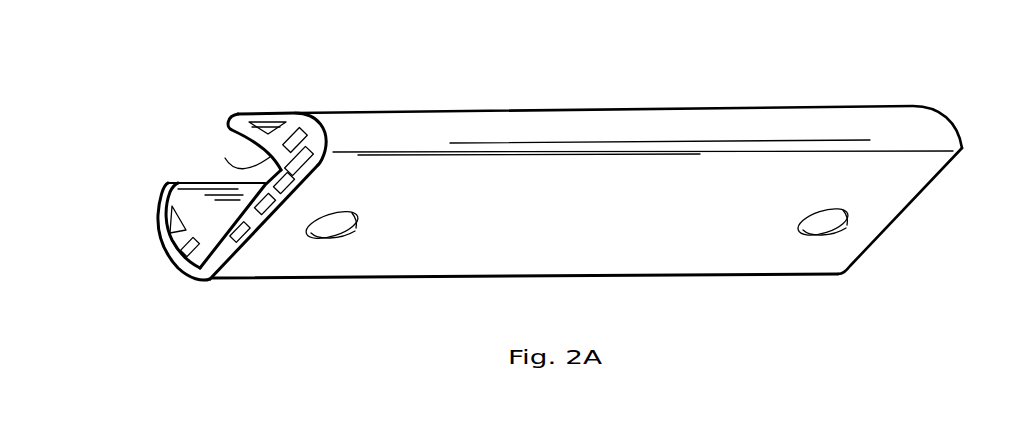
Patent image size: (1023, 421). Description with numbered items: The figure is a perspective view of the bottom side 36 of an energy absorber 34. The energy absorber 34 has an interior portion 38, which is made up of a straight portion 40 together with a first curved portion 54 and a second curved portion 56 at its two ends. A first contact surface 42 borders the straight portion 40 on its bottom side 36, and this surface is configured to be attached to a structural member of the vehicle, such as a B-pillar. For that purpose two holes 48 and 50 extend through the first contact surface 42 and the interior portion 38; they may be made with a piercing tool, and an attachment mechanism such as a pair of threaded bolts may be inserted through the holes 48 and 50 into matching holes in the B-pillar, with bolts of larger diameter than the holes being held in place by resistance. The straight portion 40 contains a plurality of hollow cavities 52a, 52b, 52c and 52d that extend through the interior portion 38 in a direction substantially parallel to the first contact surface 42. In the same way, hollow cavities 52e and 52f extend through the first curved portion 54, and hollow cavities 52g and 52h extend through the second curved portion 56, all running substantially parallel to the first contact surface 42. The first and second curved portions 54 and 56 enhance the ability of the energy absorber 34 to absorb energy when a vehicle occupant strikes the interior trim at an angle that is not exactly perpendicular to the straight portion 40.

The energy absorber 34 is at (922, 94).
The bottom side 36 is at (892, 281).
The interior portion 38 is at (158, 198).
The straight portion 40 is at (224, 160).
The first contact surface 42 is at (773, 263).
The hole 48 is at (347, 233).
The hole 50 is at (840, 228).
The hollow cavity 52a is at (213, 250).
The hollow cavity 52b is at (256, 214).
The hollow cavity 52c is at (276, 235).
The hollow cavity 52d is at (310, 170).
The hollow cavity 52e is at (157, 225).
The hollow cavity 52f is at (177, 247).
The hollow cavity 52g is at (262, 122).
The hollow cavity 52h is at (291, 130).
The first curved portion 54 is at (172, 280).
The second curved portion 56 is at (317, 120).